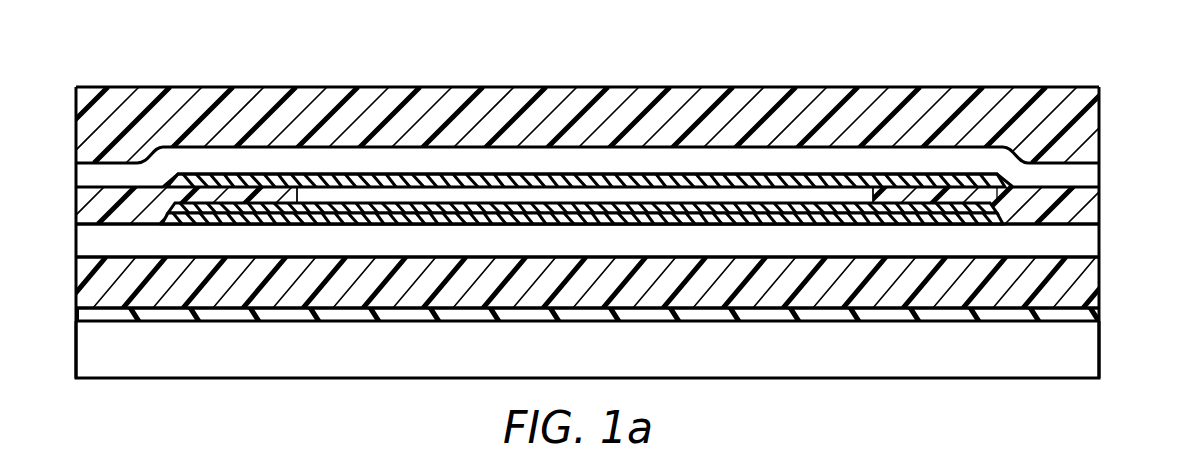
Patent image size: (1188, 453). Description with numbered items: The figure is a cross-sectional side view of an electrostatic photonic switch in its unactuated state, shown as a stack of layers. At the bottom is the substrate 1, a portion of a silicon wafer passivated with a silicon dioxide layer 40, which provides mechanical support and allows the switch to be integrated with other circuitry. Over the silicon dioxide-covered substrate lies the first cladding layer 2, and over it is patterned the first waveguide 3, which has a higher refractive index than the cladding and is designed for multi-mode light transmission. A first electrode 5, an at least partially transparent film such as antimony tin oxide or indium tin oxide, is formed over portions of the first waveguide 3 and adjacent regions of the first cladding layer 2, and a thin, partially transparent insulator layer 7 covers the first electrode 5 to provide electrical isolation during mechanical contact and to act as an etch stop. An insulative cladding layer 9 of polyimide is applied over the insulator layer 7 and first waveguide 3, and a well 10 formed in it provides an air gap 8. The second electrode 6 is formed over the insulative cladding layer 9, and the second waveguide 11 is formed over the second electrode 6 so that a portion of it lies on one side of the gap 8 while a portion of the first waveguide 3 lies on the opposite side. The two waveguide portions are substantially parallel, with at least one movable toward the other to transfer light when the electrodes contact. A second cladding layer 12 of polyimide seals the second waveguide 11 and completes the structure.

The substrate 1 is at (1067, 343).
The first cladding layer 2 is at (1077, 283).
The first waveguide 3 is at (1075, 240).
The first electrode 5 is at (200, 205).
The second electrode 6 is at (233, 198).
The insulator layer 7 is at (358, 208).
The air gap 8 is at (760, 193).
The insulative cladding layer 9 is at (97, 210).
The well 10 is at (277, 184).
The second waveguide 11 is at (88, 177).
The second cladding layer 12 is at (1075, 117).
The silicon dioxide layer 40 is at (1086, 319).